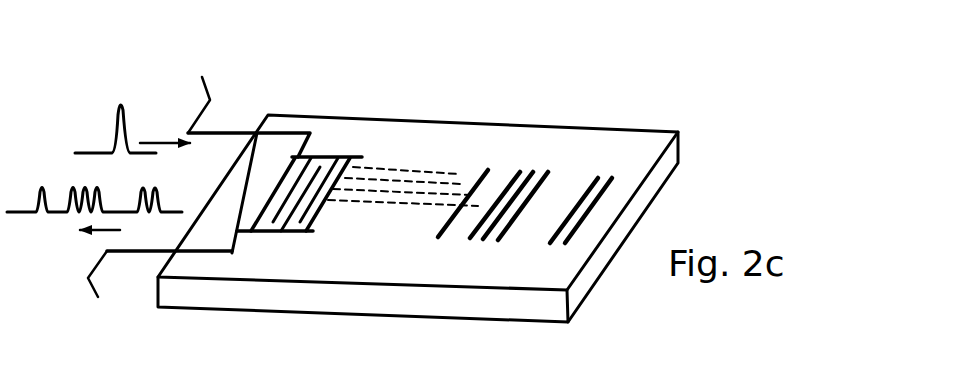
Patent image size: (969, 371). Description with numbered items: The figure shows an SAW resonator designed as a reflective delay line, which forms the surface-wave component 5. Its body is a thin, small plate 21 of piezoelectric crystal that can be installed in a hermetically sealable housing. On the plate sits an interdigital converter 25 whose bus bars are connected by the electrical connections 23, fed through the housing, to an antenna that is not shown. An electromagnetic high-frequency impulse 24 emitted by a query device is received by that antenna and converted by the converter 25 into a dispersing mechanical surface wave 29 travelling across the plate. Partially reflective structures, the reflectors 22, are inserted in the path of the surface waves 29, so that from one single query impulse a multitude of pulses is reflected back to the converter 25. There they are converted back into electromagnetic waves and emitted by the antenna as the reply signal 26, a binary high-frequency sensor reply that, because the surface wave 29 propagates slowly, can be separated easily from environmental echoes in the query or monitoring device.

The surface-wave component 5 is at (397, 188).
The plate 21 is at (272, 292).
The reflectors 22 is at (610, 156).
The electrical connections 23 is at (197, 186).
The electromagnetic high-frequency impulse 24 is at (104, 84).
The interdigital converter 25 is at (355, 132).
The reply signal 26 is at (38, 172).
The surface wave 29 is at (457, 163).